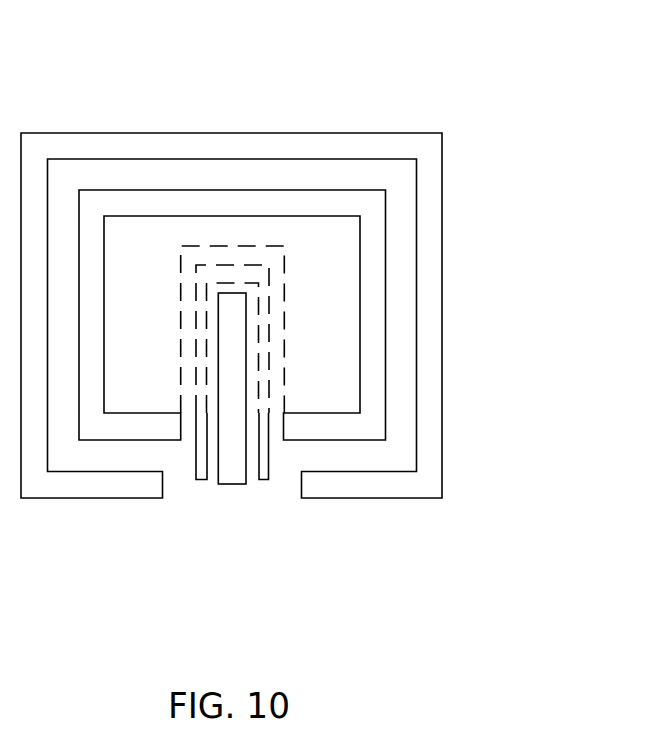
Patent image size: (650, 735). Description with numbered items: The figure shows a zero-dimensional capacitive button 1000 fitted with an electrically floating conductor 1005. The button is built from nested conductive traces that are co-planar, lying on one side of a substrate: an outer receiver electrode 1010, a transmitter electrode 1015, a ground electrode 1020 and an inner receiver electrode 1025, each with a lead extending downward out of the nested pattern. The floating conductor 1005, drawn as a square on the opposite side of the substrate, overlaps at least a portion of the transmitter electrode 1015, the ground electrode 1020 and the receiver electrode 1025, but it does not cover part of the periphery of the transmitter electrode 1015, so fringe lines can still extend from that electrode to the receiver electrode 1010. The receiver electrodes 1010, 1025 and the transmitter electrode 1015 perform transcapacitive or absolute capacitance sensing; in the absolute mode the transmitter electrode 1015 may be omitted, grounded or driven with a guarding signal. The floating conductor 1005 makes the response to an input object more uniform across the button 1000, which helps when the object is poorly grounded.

The zero-dimensional capacitive button 1000 is at (508, 88).
The electrically floating conductor 1005 is at (360, 325).
The receiver electrode 1010 is at (95, 498).
The transmitter electrode 1015 is at (170, 440).
The ground electrode 1020 is at (200, 480).
The receiver electrode 1025 is at (238, 484).